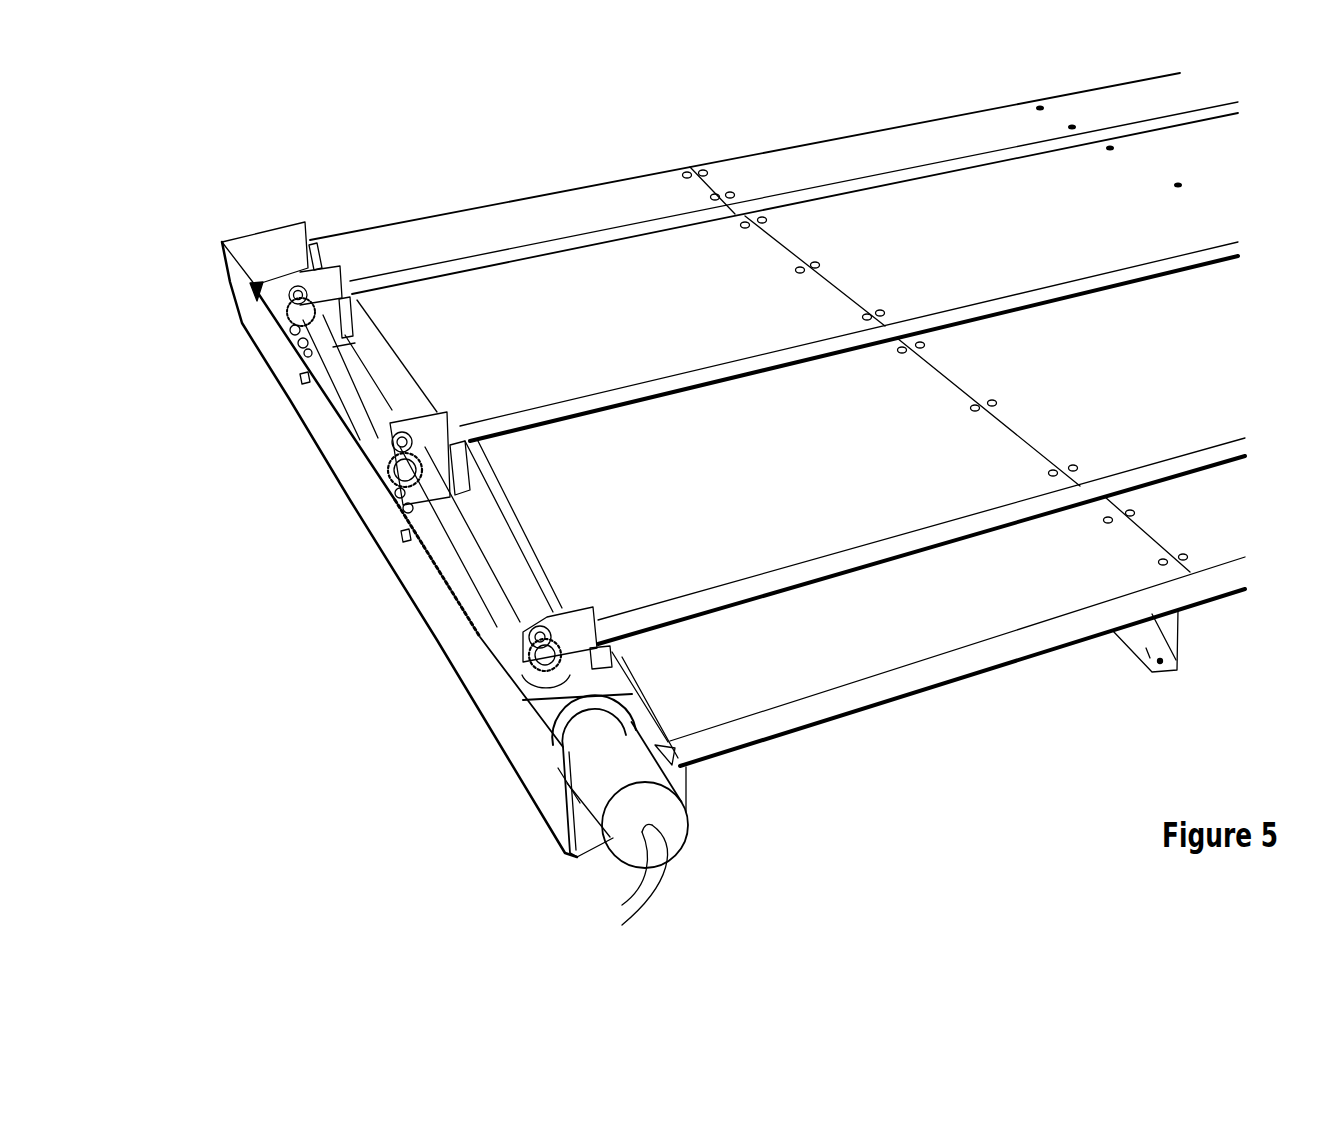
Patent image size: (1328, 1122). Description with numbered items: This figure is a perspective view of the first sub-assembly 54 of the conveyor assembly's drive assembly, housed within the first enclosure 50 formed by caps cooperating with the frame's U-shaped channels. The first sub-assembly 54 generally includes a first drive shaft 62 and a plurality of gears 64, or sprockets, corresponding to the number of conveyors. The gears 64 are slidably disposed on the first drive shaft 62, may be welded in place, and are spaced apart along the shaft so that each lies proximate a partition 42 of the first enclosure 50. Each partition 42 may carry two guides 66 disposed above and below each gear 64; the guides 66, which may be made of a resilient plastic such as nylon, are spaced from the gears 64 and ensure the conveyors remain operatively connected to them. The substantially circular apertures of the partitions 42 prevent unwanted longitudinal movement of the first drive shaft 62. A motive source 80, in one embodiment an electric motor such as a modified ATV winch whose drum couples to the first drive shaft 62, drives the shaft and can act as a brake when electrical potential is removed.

The partition 42 is at (425, 425).
The first enclosure 50 is at (270, 262).
The first sub-assembly 54 is at (330, 192).
The first drive shaft 62 is at (473, 565).
The gear 64 is at (423, 460).
The guide 66 is at (542, 630).
The motive source 80 is at (588, 762).